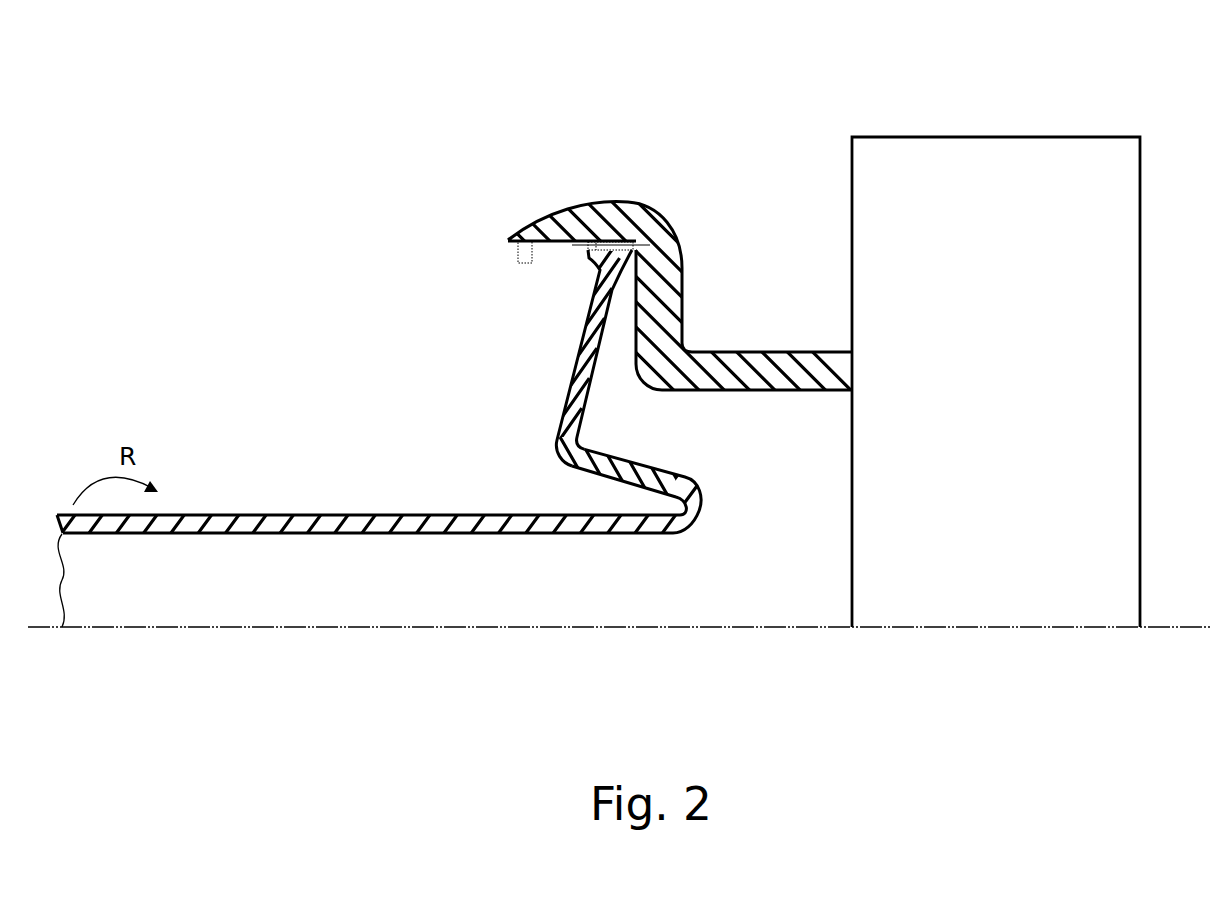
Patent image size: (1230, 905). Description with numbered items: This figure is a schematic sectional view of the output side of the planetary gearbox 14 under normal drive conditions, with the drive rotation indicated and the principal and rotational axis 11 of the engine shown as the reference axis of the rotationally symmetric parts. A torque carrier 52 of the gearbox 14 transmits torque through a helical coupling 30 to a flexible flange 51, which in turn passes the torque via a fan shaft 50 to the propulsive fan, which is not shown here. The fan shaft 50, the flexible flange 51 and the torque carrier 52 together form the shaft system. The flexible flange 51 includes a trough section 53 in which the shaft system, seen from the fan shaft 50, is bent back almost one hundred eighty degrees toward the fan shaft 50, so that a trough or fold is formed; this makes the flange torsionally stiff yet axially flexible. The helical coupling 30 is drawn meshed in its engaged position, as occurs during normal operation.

The principal and rotational axis 11 is at (325, 628).
The gearbox 14 is at (1036, 105).
The helical coupling 30 is at (587, 271).
The fan shaft 50 is at (270, 513).
The flexible flange 51 is at (590, 431).
The torque carrier 52 is at (683, 312).
The trough section 53 is at (638, 506).